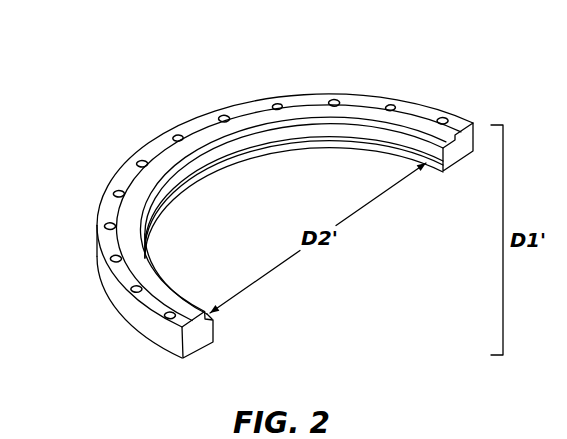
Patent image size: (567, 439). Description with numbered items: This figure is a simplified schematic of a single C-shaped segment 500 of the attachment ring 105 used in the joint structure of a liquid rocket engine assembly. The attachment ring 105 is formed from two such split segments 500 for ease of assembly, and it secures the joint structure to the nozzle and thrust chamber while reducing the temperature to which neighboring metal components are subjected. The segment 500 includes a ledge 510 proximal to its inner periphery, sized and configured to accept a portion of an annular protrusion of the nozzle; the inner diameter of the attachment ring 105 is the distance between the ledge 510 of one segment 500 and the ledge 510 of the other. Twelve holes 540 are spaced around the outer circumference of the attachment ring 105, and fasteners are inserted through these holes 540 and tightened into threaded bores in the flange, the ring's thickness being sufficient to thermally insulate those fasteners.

The segment 500 is at (164, 78).
The attachment ring 105 is at (360, 59).
The holes 540 is at (117, 291).
The ledge 510 is at (227, 329).